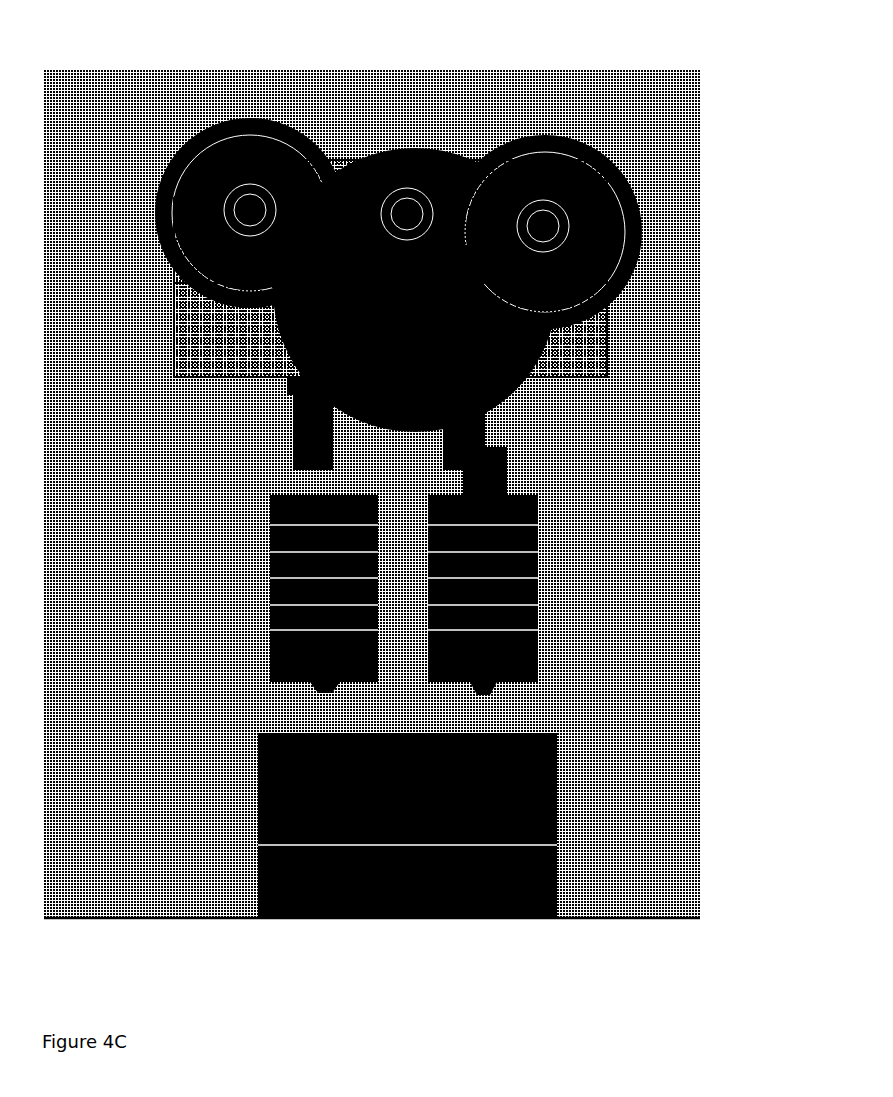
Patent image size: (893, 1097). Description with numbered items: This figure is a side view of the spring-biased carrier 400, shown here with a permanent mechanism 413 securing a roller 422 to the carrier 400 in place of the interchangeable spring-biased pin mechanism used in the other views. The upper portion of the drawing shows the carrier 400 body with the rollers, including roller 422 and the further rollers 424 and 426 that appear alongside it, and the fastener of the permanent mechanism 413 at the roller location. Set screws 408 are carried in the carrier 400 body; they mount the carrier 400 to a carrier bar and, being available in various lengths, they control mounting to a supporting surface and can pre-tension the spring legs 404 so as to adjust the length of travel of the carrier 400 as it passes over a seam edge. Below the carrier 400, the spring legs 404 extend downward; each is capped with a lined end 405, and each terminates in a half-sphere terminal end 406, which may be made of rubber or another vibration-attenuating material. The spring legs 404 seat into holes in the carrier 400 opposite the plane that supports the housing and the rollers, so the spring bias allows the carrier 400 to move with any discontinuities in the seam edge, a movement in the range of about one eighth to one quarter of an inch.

The carrier 400 is at (122, 125).
The first wheel 426 is at (243, 120).
The second wheel 424 is at (415, 150).
The roller 422 is at (600, 158).
The permanent mechanism 413 is at (565, 232).
The set screws 408 is at (306, 368).
The spring legs 404 is at (530, 543).
The lined ends 405 is at (540, 657).
The half-sphere terminal ends 406 is at (495, 692).